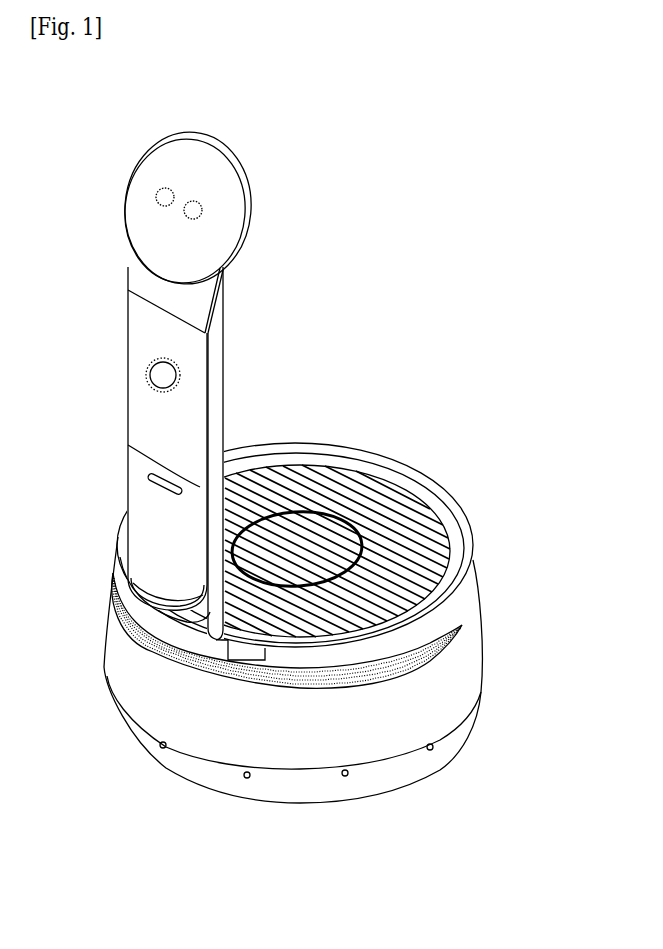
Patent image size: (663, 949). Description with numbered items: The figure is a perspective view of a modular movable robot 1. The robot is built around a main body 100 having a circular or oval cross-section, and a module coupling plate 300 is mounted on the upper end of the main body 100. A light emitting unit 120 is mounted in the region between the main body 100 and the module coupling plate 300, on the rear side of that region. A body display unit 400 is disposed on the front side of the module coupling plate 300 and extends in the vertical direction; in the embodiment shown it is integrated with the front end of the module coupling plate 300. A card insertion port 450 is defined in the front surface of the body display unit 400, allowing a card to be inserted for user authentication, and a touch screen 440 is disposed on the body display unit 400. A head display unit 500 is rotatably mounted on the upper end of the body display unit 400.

The modular movable robot 1 is at (64, 73).
The main body 100 is at (473, 643).
The light emitting unit 120 is at (474, 564).
The module coupling plate 300 is at (385, 462).
The body display unit 400 is at (214, 398).
The touch screen 440 is at (145, 371).
The card insertion port 450 is at (147, 477).
The head display unit 500 is at (249, 187).